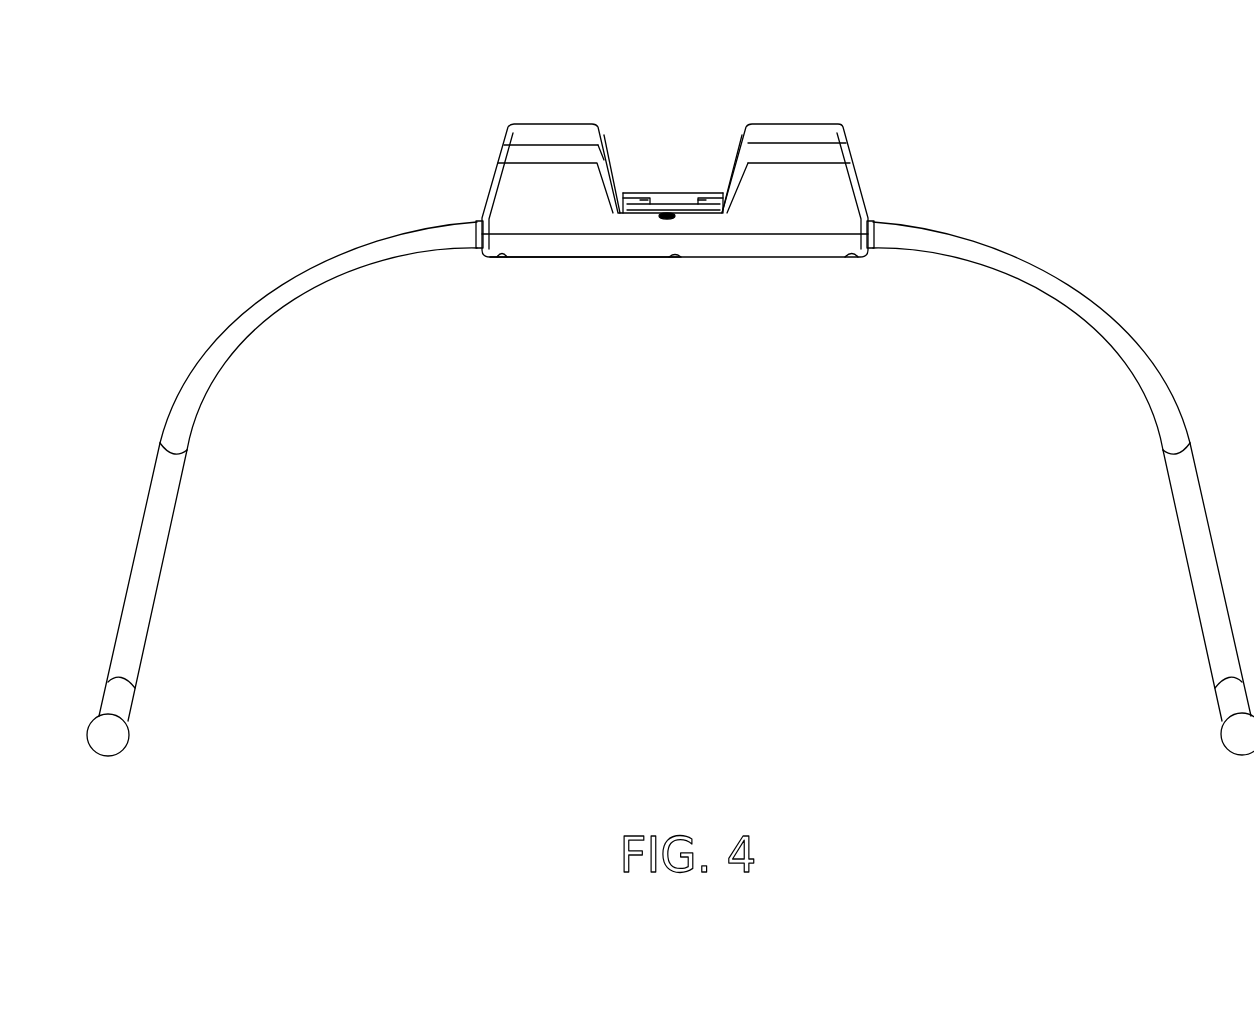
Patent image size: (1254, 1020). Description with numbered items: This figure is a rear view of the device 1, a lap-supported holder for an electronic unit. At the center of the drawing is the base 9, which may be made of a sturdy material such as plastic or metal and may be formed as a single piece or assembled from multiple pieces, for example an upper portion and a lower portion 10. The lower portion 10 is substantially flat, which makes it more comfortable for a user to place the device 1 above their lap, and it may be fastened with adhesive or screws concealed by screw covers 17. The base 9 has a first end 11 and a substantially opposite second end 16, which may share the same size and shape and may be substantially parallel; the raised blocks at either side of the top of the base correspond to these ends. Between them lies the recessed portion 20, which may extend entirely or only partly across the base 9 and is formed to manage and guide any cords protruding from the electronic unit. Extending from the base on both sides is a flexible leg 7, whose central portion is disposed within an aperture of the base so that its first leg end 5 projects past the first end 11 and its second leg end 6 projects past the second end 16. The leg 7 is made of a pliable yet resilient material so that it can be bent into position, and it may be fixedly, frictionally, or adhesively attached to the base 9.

The device 1 is at (206, 228).
The first leg end 5 is at (128, 733).
The second leg end 6 is at (1221, 734).
The flexible leg 7 is at (1055, 272).
The base 9 is at (660, 200).
The lower portion 10 is at (767, 258).
The first end 11 is at (502, 139).
The second end 16 is at (857, 163).
The screw covers 17 is at (498, 258).
The recessed portion 20 is at (660, 215).